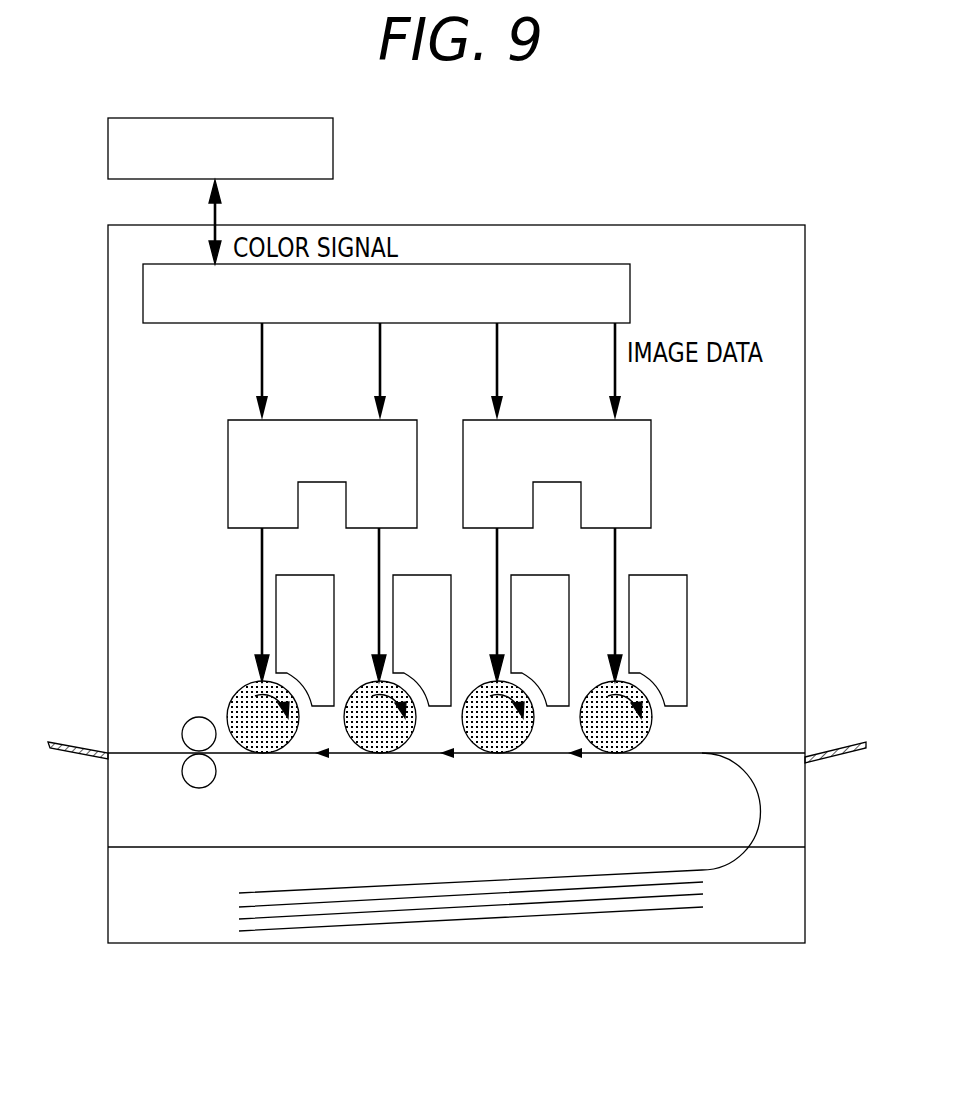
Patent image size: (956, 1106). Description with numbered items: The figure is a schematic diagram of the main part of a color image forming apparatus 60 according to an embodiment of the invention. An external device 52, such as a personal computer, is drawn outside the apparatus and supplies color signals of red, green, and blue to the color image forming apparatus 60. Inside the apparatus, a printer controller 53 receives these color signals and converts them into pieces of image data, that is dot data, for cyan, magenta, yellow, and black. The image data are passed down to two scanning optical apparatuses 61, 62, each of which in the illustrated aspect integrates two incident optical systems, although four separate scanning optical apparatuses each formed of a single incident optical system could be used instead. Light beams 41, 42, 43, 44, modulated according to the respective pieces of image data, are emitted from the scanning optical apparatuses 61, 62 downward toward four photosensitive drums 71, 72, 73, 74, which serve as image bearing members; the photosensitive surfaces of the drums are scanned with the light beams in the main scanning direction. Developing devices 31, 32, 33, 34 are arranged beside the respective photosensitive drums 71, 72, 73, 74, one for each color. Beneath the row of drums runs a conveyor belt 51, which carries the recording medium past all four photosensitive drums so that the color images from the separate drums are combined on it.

The developing device 31 is at (303, 580).
The developing device 32 is at (421, 580).
The developing device 33 is at (537, 580).
The developing device 34 is at (668, 580).
The light beam 41 is at (258, 632).
The light beam 42 is at (378, 632).
The light beam 43 is at (496, 632).
The light beam 44 is at (615, 632).
The conveyor belt 51 is at (748, 758).
The external device 52 is at (333, 133).
The printer controller 53 is at (630, 283).
The color image forming apparatus 60 is at (682, 225).
The scanning optical apparatus 61 is at (242, 423).
The scanning optical apparatus 62 is at (478, 423).
The photosensitive drum 71 is at (263, 750).
The photosensitive drum 72 is at (380, 750).
The photosensitive drum 73 is at (498, 750).
The photosensitive drum 74 is at (616, 750).